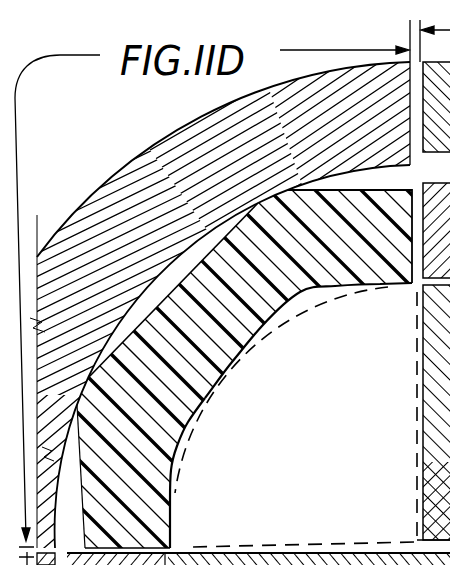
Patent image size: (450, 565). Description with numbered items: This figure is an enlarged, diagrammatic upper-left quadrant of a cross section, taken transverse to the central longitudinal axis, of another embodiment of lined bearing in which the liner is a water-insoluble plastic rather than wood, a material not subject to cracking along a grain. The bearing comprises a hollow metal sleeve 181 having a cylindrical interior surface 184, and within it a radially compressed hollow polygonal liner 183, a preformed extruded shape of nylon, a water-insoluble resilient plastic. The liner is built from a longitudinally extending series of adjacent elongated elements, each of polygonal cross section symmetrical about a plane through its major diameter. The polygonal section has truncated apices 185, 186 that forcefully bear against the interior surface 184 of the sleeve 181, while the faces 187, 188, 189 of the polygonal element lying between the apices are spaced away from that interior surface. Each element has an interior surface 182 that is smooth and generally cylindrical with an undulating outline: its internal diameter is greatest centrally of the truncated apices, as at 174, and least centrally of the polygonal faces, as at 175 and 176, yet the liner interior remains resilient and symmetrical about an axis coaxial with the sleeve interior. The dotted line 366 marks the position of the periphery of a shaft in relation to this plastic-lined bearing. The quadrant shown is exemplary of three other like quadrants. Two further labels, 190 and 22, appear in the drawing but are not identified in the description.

The hollow metal sleeve 181 is at (137, 155).
The truncated apex 185 is at (80, 390).
The polygonal face 189 is at (80, 502).
The cylindrical interior surface 184 is at (219, 229).
The polygonal face 187 is at (212, 273).
The truncated apex 186 is at (277, 194).
The interior surface 182 is at (292, 312).
The polygonal face 188 is at (346, 189).
The minimum internal diameter location 175 is at (241, 361).
The maximum internal diameter location 174 is at (179, 436).
The dotted line 366 is at (204, 422).
The hollow polygonal liner 183 is at (166, 505).
The minimum internal diameter location 176 is at (175, 540).
The dashed outline 190 is at (449, 441).
The support structure 22 is at (436, 301).